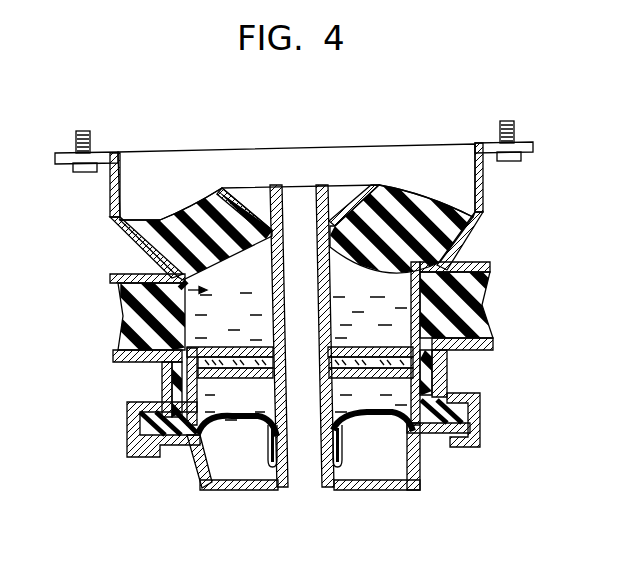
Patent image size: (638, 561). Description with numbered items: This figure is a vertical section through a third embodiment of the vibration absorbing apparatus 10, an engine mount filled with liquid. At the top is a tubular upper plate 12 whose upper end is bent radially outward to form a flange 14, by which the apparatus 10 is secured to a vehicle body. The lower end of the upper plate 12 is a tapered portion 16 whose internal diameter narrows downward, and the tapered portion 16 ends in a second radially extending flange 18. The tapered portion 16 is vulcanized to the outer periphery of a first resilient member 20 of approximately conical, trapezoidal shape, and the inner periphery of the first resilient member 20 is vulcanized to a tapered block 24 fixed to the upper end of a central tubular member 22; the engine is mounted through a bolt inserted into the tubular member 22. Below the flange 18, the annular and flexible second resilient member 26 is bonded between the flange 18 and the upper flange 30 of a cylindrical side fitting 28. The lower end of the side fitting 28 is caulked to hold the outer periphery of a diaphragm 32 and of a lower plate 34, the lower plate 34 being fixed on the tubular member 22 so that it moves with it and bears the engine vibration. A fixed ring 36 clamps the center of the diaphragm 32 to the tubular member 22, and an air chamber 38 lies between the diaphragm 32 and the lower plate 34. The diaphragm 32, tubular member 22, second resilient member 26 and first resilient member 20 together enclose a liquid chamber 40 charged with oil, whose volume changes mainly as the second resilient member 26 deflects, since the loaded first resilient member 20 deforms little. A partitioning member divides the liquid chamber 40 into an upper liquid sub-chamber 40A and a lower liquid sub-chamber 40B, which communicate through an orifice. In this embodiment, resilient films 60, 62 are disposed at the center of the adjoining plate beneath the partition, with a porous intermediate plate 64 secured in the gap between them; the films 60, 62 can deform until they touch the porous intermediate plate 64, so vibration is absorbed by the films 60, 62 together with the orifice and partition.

The vibration absorbing apparatus 10 is at (445, 131).
The upper plate 12 is at (484, 188).
The flange 14 is at (512, 144).
The tapered portion 16 is at (478, 216).
The flange 18 is at (481, 262).
The first resilient member 20 is at (390, 212).
The tubular member 22 is at (317, 185).
The tapered block 24 is at (373, 184).
The second resilient member 26 is at (460, 302).
The side fitting 28 is at (458, 366).
The upper flange 30 is at (490, 342).
The diaphragm 32 is at (232, 428).
The lower plate 34 is at (362, 491).
The fixed ring 36 is at (276, 470).
The air chamber 38 is at (414, 477).
The liquid chamber 40 is at (118, 297).
The upper liquid sub-chamber 40A is at (388, 297).
The lower liquid sub-chamber 40B is at (278, 408).
The resilient film 60 is at (238, 357).
The resilient film 62 is at (191, 446).
The porous intermediate plate 64 is at (222, 349).